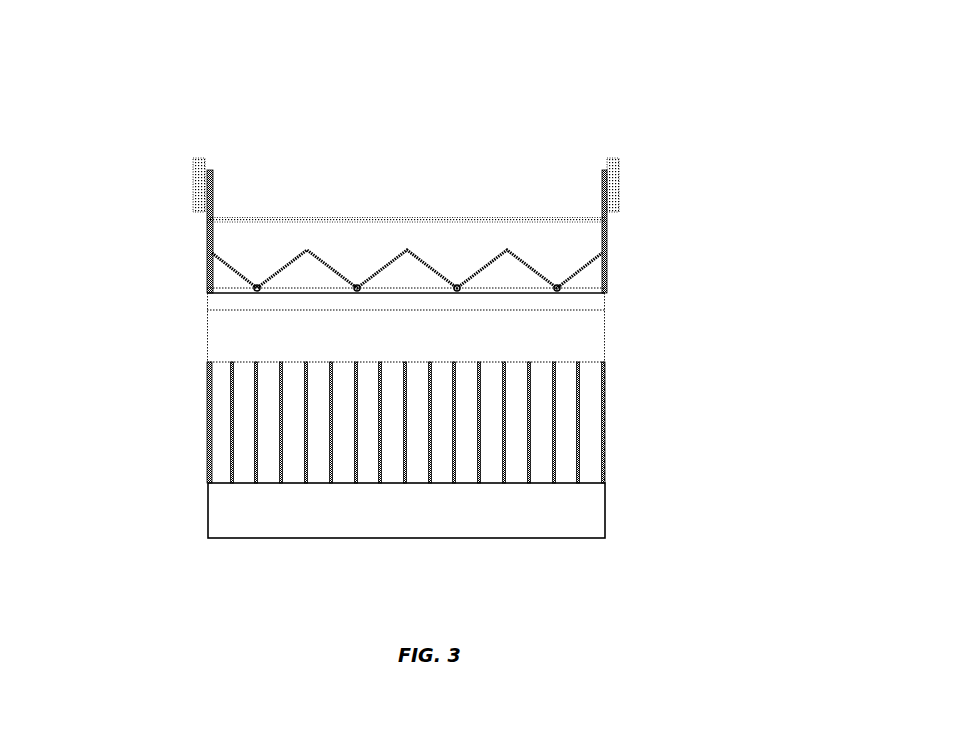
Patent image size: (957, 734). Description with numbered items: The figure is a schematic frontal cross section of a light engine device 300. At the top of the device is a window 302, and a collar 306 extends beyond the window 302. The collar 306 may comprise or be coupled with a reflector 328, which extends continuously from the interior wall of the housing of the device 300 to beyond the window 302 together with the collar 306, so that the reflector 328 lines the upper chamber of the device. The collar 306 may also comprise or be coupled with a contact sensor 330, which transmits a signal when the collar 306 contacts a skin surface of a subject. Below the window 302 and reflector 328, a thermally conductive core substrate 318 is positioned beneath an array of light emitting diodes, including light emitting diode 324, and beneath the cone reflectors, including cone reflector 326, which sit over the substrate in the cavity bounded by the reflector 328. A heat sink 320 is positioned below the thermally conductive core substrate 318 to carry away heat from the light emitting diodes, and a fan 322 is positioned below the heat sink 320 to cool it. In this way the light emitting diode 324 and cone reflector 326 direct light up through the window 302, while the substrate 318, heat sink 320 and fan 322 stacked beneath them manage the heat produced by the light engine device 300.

The light engine device 300 is at (416, 275).
The window 302 is at (582, 218).
The collar 306 is at (610, 170).
The thermally conductive core substrate 318 is at (587, 300).
The heat sink 320 is at (587, 417).
The fan 322 is at (583, 517).
The light emitting diode 324 is at (253, 288).
The cone reflector 326 is at (220, 263).
The reflector 328 is at (597, 235).
The contact sensor 330 is at (602, 162).